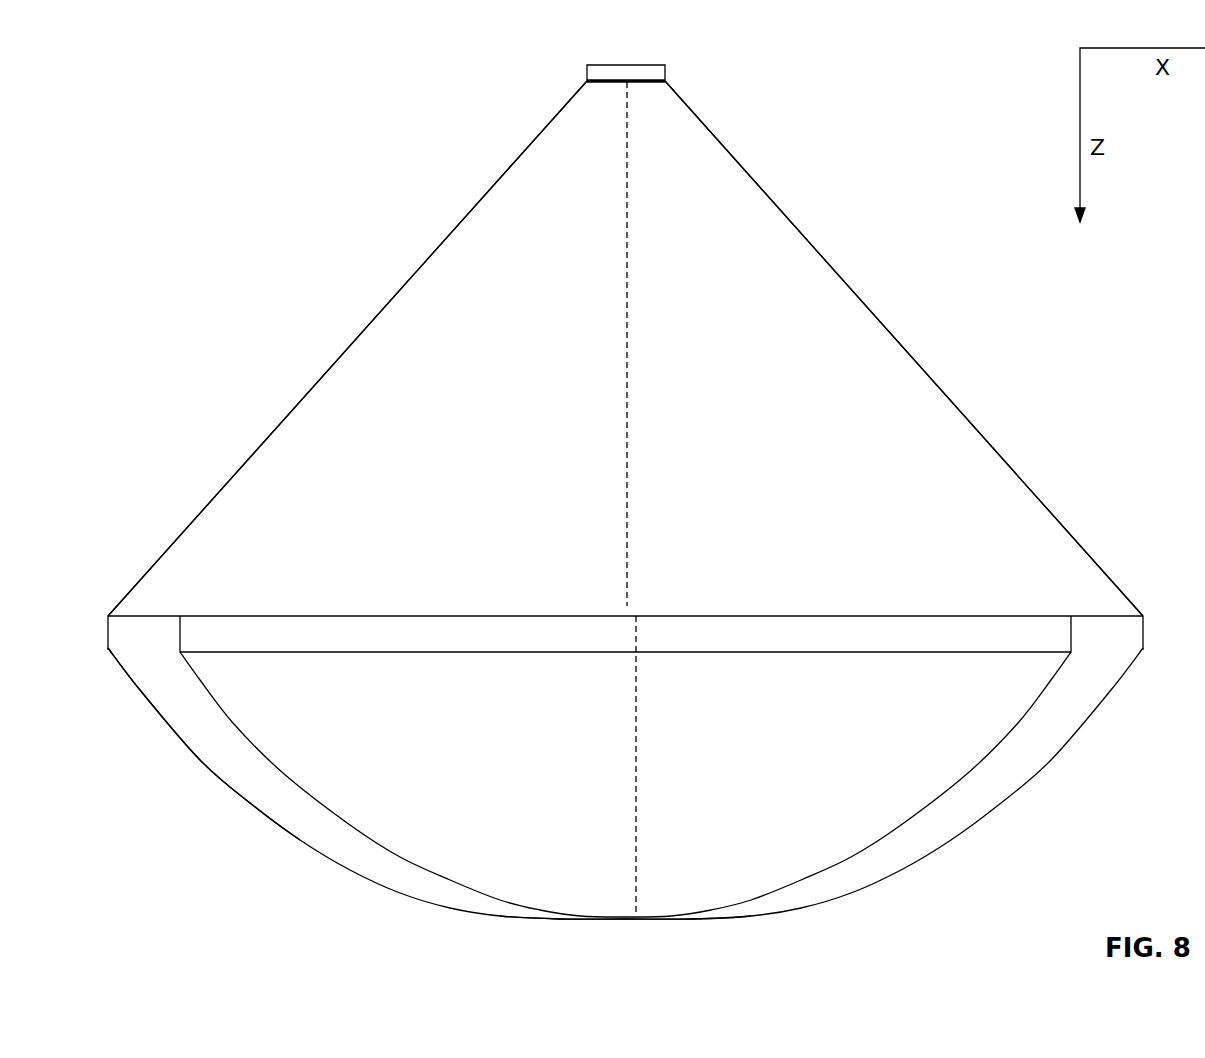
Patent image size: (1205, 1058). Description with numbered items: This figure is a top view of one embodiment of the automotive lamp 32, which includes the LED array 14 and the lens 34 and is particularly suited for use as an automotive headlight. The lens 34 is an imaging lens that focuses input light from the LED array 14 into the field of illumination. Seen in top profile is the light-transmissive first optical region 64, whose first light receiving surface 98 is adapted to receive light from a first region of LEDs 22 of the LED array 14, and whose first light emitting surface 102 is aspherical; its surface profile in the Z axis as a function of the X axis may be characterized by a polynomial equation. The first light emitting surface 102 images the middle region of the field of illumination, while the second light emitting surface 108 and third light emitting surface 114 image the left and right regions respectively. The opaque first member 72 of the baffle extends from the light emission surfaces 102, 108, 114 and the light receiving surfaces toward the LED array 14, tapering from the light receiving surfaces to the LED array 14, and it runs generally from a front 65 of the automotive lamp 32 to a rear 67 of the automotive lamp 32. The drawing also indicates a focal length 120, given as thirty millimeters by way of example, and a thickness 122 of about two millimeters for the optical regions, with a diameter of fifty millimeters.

The LED array 14 is at (587, 67).
The first region of LEDs 22 is at (654, 83).
The automotive lamp 32 is at (297, 70).
The lens 34 is at (258, 214).
The light-transmissive first optical region 64 is at (548, 786).
The front 65 is at (452, 947).
The rear 67 is at (818, 104).
The opaque first member 72 is at (968, 465).
The first light receiving surface 98 is at (870, 610).
The first light emitting surface 102 is at (908, 798).
The second light emitting surface 108 is at (908, 868).
The third light emitting surface 114 is at (298, 845).
The focal length 120 is at (630, 405).
The thickness 122 is at (637, 812).